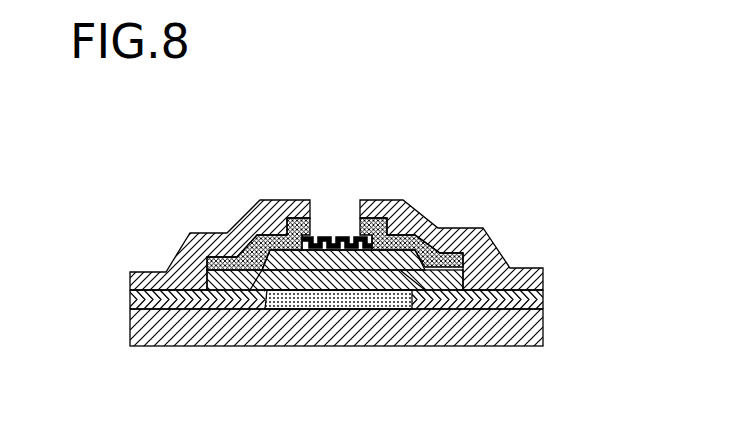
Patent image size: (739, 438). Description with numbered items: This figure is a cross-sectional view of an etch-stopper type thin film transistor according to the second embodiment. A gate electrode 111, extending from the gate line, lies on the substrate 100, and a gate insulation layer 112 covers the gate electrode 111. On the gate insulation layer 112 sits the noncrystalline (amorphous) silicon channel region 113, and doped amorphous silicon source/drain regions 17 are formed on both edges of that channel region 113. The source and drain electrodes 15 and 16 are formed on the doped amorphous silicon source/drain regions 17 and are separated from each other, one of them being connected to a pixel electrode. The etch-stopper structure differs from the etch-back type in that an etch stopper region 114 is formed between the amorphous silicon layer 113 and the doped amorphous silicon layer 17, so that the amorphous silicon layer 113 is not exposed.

The substrate 100 is at (543, 321).
The gate electrode 111 is at (353, 307).
The gate insulation layer 112 is at (140, 301).
The source electrode 15 is at (173, 263).
The drain electrode 16 is at (390, 202).
The doped amorphous silicon source/drain regions 17 is at (219, 262).
The amorphous silicon channel region 113 is at (457, 260).
The etch stopper region 114 is at (340, 238).